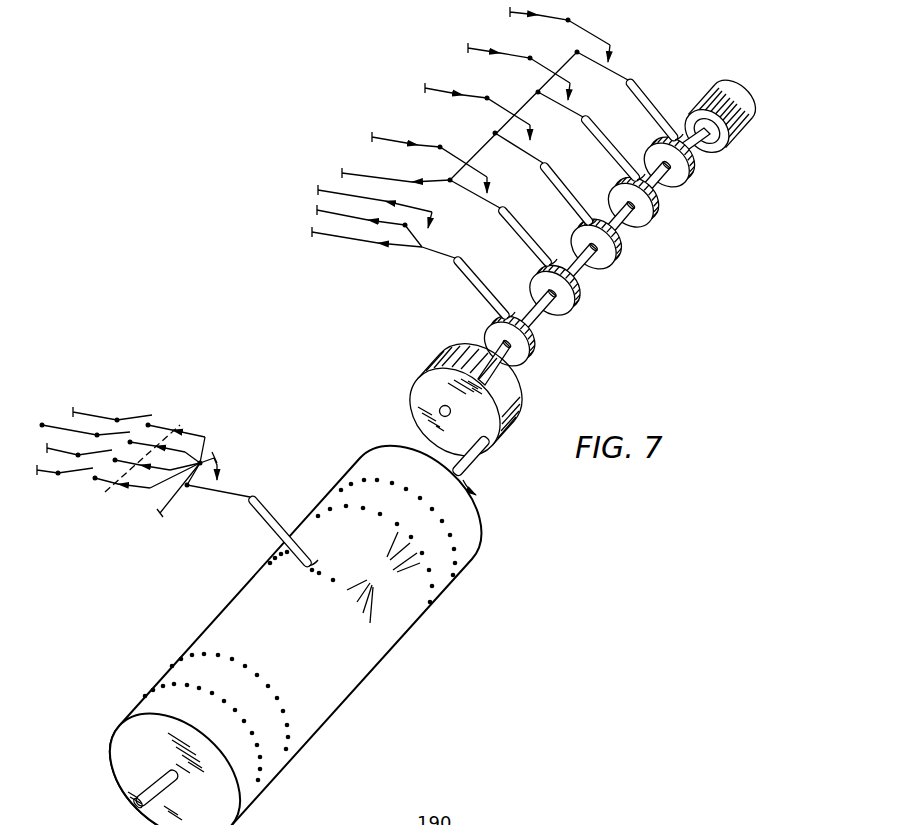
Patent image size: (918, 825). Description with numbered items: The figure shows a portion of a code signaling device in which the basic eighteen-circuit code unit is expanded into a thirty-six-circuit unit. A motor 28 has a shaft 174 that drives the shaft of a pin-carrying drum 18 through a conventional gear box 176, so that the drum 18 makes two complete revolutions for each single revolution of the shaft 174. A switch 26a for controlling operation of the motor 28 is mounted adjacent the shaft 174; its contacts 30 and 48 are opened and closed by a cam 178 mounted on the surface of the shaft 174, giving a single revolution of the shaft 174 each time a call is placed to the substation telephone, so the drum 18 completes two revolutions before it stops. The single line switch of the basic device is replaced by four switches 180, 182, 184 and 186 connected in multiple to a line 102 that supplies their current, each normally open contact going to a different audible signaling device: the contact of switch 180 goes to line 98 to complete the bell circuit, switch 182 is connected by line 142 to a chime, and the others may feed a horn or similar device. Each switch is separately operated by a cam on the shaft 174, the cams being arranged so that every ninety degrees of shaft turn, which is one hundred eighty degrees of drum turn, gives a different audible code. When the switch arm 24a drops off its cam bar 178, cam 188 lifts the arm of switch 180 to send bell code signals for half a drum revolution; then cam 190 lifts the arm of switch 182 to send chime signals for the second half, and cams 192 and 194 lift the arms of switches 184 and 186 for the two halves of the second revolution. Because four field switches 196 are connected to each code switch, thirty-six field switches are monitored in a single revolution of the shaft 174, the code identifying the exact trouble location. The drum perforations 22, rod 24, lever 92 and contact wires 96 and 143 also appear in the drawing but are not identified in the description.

The drum 18 is at (468, 521).
The perforations 22 is at (383, 577).
The stylus rod 24 is at (277, 527).
The switch arm 24a is at (493, 298).
The switch 26a is at (453, 287).
The motor 28 is at (711, 99).
The contact 30 is at (424, 249).
The contact 48 is at (390, 206).
The lever 92 is at (176, 499).
The contact wire 96 is at (101, 414).
The line 98 is at (410, 140).
The line 102 is at (403, 176).
The line 142 is at (453, 92).
The contact wire 143 is at (43, 424).
The shaft 174 is at (616, 217).
The gear box 176 is at (518, 413).
The cam 178 is at (523, 355).
The switch 180 is at (602, 292).
The switch 182 is at (648, 245).
The switch 184 is at (678, 205).
The switch 186 is at (710, 168).
The cam 188 is at (568, 311).
The cam 190 is at (619, 263).
The cam 192 is at (655, 227).
The cam 194 is at (688, 180).
The field switches 196 is at (157, 408).